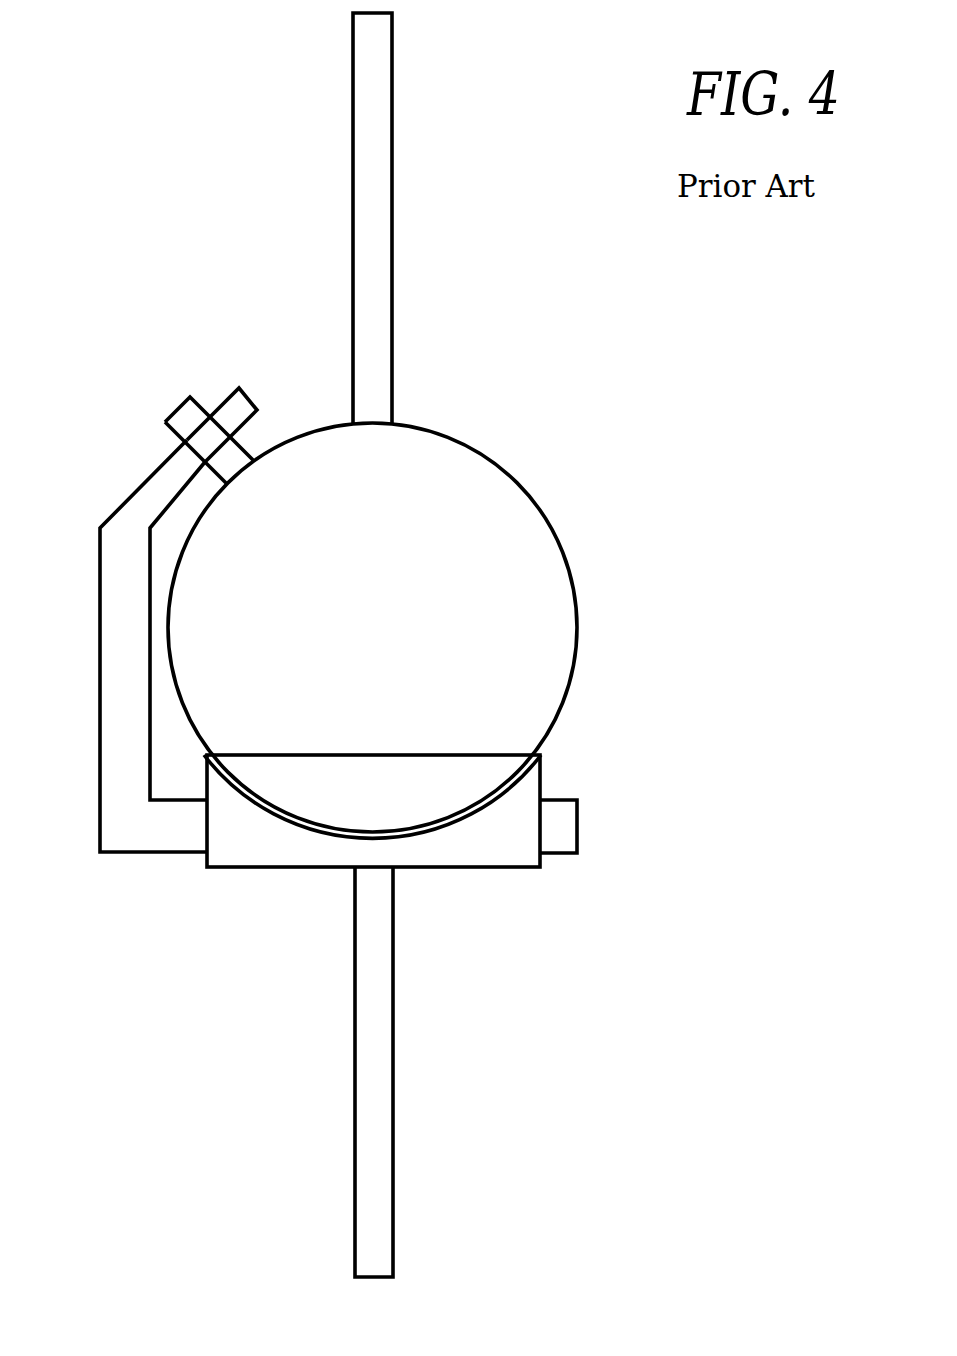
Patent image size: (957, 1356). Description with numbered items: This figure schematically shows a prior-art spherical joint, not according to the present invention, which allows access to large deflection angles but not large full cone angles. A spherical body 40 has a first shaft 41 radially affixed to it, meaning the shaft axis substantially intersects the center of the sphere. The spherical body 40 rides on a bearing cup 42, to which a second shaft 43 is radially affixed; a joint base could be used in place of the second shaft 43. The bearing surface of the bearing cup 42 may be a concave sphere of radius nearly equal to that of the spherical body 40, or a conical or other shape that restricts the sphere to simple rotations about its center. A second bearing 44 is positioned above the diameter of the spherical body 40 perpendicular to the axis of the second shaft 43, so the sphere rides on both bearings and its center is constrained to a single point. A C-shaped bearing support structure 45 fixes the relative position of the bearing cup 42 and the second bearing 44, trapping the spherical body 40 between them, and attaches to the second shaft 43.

The spherical body 40 is at (376, 637).
The first shaft 41 is at (389, 128).
The bearing cup 42 is at (529, 851).
The second shaft 43 is at (393, 1211).
The second bearing 44 is at (177, 412).
The C-shaped bearing support structure 45 is at (100, 673).